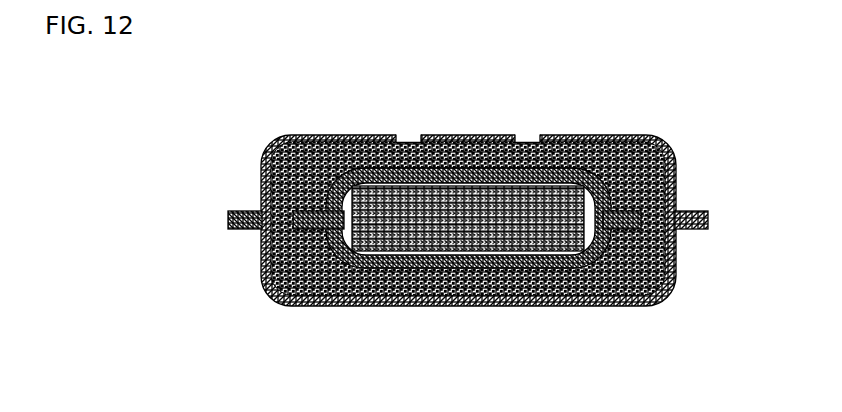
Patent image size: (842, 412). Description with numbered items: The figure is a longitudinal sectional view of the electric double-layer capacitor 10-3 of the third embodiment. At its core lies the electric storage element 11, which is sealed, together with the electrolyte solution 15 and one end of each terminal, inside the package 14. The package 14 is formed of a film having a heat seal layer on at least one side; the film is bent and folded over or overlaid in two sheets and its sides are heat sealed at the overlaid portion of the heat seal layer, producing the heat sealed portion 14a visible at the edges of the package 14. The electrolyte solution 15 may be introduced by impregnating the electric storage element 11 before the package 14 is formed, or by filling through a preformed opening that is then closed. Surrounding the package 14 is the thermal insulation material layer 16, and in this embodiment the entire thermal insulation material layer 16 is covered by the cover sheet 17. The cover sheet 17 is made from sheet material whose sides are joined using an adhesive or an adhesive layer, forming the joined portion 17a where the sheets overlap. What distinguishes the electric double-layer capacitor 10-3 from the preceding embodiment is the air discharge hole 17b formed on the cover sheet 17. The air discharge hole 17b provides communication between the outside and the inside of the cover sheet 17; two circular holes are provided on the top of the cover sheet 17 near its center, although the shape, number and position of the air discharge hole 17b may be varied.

The electric double-layer capacitor 10-3 is at (474, 193).
The electric storage element 11 is at (362, 180).
The package 14 is at (483, 163).
The heat sealed portion 14a is at (620, 200).
The electrolyte solution 15 is at (592, 170).
The thermal insulation material layer 16 is at (445, 152).
The cover sheet 17 is at (570, 129).
The joined portion 17a is at (688, 202).
The air discharge hole 17b is at (400, 129).